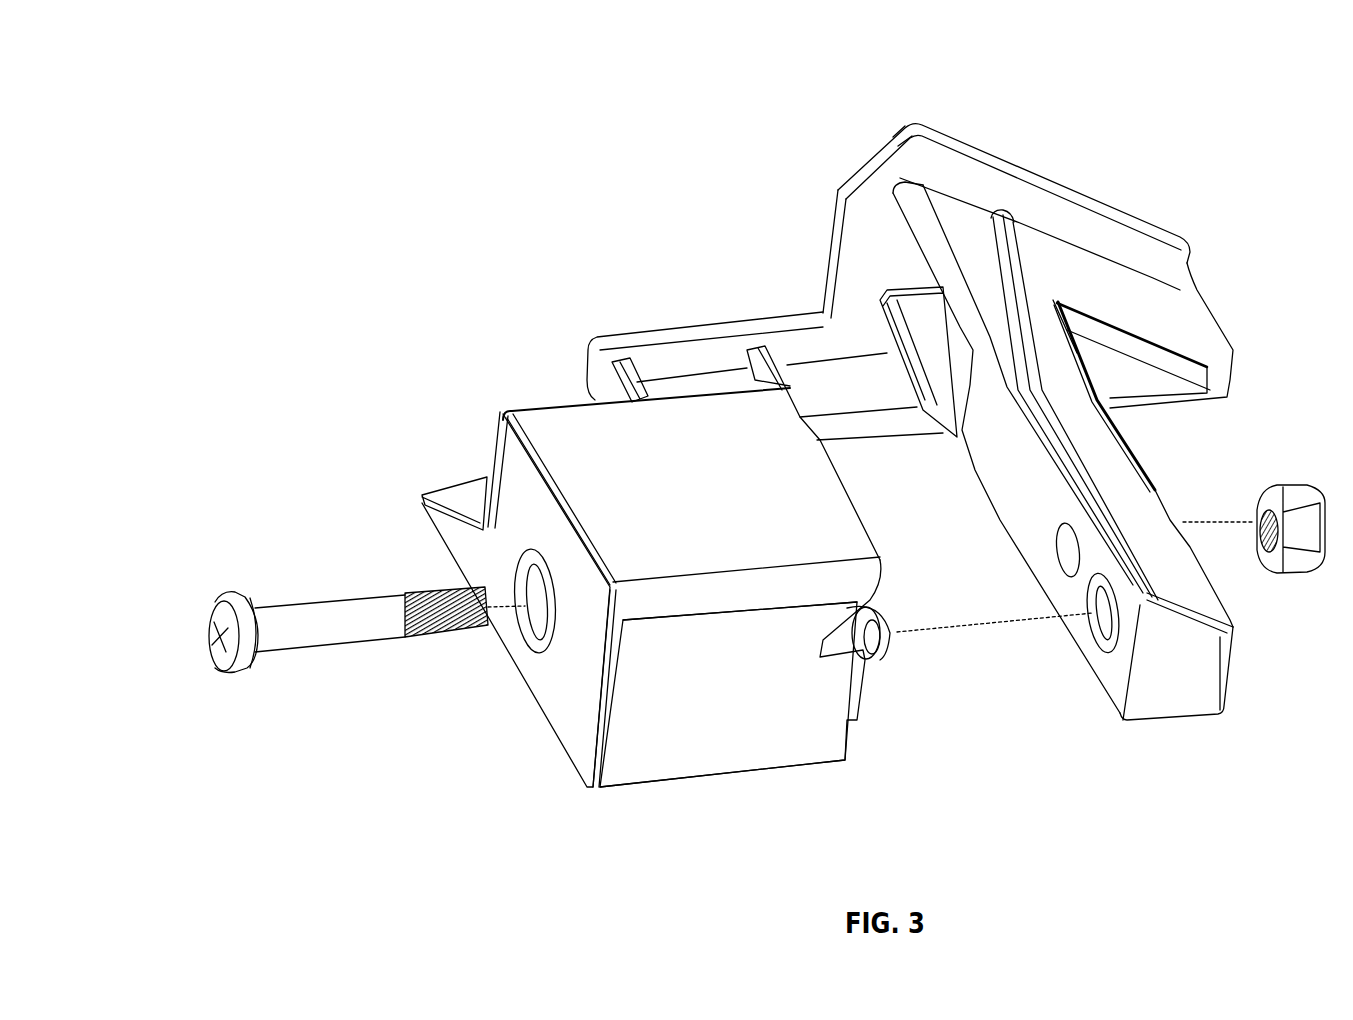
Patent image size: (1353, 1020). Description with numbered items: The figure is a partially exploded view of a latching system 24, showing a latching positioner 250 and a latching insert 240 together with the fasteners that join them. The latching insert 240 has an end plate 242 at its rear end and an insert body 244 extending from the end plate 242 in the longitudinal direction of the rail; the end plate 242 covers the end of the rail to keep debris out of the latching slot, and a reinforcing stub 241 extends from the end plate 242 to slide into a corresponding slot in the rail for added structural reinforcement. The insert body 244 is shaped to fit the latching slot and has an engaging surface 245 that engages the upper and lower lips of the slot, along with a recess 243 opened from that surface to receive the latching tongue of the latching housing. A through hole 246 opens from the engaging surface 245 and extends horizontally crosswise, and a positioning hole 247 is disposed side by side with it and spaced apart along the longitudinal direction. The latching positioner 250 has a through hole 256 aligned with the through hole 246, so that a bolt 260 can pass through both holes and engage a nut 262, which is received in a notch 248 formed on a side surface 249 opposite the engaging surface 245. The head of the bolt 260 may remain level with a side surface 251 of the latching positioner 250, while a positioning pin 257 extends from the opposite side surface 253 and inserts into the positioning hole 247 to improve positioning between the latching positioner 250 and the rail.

The latching system 24 is at (1138, 70).
The latching insert 240 is at (752, 155).
The reinforcing stub 241 is at (1137, 307).
The end plate 242 is at (1075, 200).
The recess 243 is at (856, 259).
The insert body 244 is at (1110, 472).
The engaging surface 245 is at (1028, 462).
The through hole 246 is at (1060, 556).
The positioning hole 247 is at (1107, 630).
The notch 248 is at (1153, 486).
The side surface 249 is at (1176, 504).
The latching positioner 250 is at (500, 467).
The side surface 251 is at (598, 674).
The side surface 253 is at (860, 690).
The through hole 256 is at (530, 633).
The positioning pin 257 is at (880, 657).
The bolt 260 is at (303, 618).
The nut 262 is at (1290, 497).